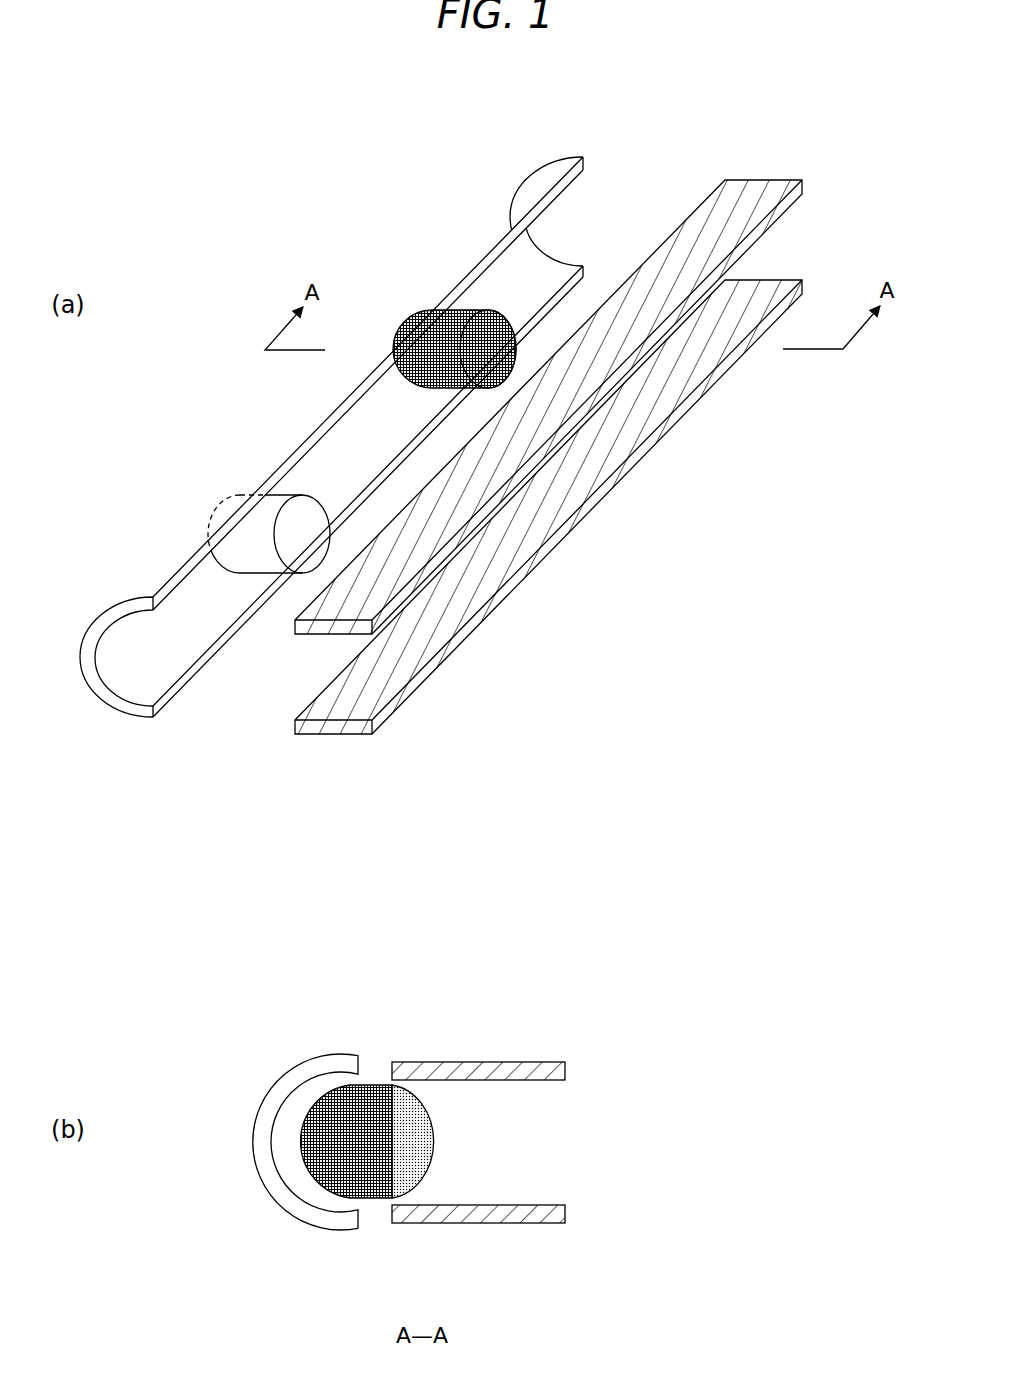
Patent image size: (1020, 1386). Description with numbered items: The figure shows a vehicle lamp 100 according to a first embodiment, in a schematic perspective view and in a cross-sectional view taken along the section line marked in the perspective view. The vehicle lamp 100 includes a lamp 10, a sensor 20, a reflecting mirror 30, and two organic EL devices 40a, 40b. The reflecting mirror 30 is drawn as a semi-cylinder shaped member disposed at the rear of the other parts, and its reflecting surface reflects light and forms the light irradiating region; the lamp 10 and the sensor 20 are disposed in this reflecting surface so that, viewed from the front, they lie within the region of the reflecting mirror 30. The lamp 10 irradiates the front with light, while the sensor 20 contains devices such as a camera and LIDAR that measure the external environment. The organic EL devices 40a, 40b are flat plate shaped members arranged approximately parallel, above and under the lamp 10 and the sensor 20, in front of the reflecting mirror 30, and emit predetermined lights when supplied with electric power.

The lamp 10 is at (255, 527).
The sensor 20 is at (420, 325).
The reflecting mirror 30 is at (543, 177).
The organic EL device 40a is at (800, 288).
The organic EL device 40b is at (802, 184).
The vehicle lamp 100 is at (432, 813).